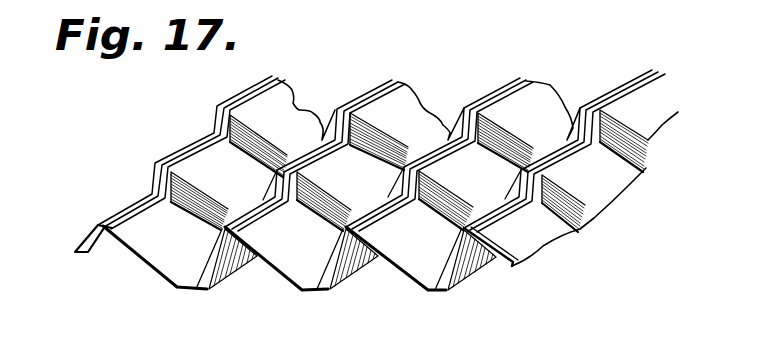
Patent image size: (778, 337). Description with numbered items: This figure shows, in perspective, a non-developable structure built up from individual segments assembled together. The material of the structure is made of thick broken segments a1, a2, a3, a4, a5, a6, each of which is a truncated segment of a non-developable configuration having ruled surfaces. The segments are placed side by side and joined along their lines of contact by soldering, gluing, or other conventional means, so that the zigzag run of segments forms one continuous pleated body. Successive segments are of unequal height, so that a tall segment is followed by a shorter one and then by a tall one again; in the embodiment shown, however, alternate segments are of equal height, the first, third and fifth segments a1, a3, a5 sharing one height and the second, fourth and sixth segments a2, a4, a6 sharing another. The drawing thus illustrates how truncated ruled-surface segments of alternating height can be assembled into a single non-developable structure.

The broken segment a1 is at (170, 256).
The broken segment a2 is at (237, 259).
The broken segment a3 is at (305, 268).
The broken segment a4 is at (353, 271).
The broken segment a5 is at (423, 275).
The broken segment a6 is at (493, 262).